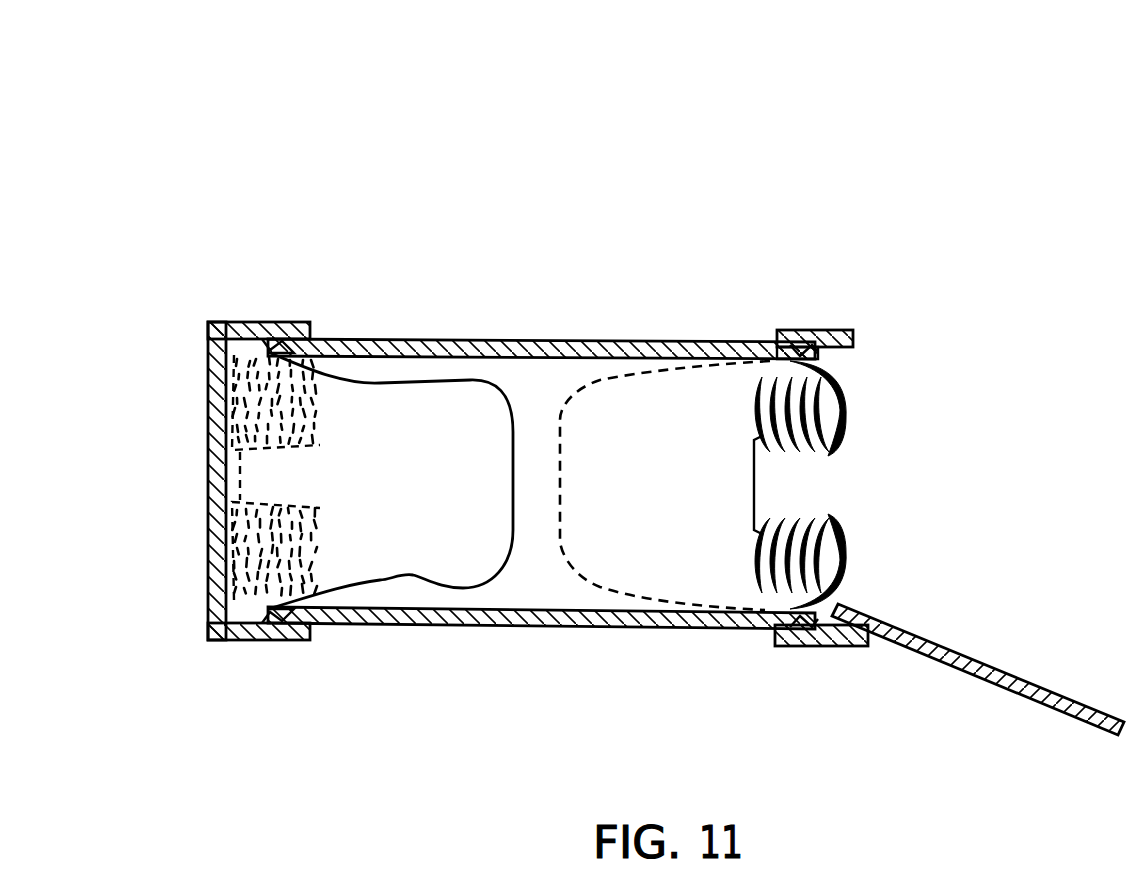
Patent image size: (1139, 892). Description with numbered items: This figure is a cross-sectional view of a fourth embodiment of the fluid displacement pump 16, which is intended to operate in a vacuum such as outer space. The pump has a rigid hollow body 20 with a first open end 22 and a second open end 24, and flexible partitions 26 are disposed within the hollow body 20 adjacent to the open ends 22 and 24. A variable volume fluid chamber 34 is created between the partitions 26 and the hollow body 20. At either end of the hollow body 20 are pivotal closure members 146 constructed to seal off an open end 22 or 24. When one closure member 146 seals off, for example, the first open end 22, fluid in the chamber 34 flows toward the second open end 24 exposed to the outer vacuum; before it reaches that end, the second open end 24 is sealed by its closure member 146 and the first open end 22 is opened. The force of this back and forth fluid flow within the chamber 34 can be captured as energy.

The fluid displacement pump 16 is at (216, 151).
The rigid hollow body 20 is at (572, 337).
The first open end 22 is at (212, 336).
The second open end 24 is at (813, 340).
The flexible partition 26 is at (296, 403).
The variable volume fluid chamber 34 is at (397, 403).
The closure member 146 is at (212, 396).